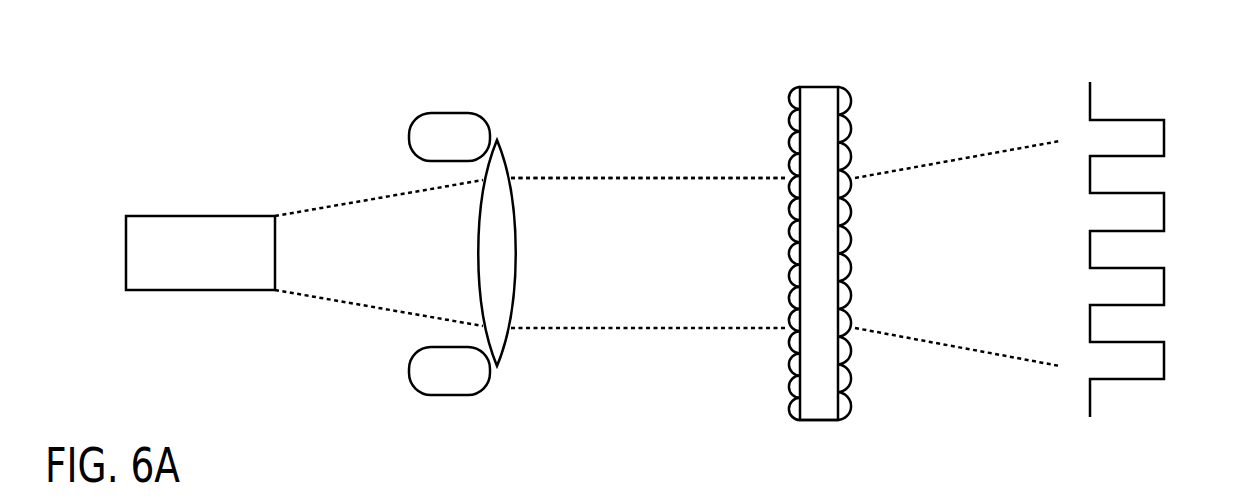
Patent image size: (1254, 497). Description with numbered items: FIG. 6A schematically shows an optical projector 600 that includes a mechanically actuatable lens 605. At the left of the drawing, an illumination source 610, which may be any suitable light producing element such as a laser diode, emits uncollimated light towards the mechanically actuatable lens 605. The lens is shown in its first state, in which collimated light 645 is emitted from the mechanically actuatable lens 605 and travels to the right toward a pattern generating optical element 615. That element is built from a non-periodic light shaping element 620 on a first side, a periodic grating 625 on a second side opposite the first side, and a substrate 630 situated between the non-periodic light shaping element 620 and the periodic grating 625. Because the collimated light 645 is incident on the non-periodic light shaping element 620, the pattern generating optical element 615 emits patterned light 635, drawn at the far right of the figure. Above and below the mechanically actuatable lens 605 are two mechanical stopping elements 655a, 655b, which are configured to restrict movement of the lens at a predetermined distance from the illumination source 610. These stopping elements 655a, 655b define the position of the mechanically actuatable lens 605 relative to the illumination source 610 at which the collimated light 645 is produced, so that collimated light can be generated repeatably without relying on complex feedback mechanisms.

The optical projector 600 is at (292, 84).
The mechanically actuatable lens 605 is at (497, 140).
The illumination source 610 is at (262, 281).
The pattern generating optical element 615 is at (815, 252).
The non-periodic light shaping element 620 is at (786, 118).
The periodic grating 625 is at (852, 107).
The substrate 630 is at (817, 420).
The patterned light 635 is at (1153, 84).
The collimated light 645 is at (657, 162).
The mechanical stopping element 655a is at (473, 149).
The mechanical stopping element 655b is at (473, 383).